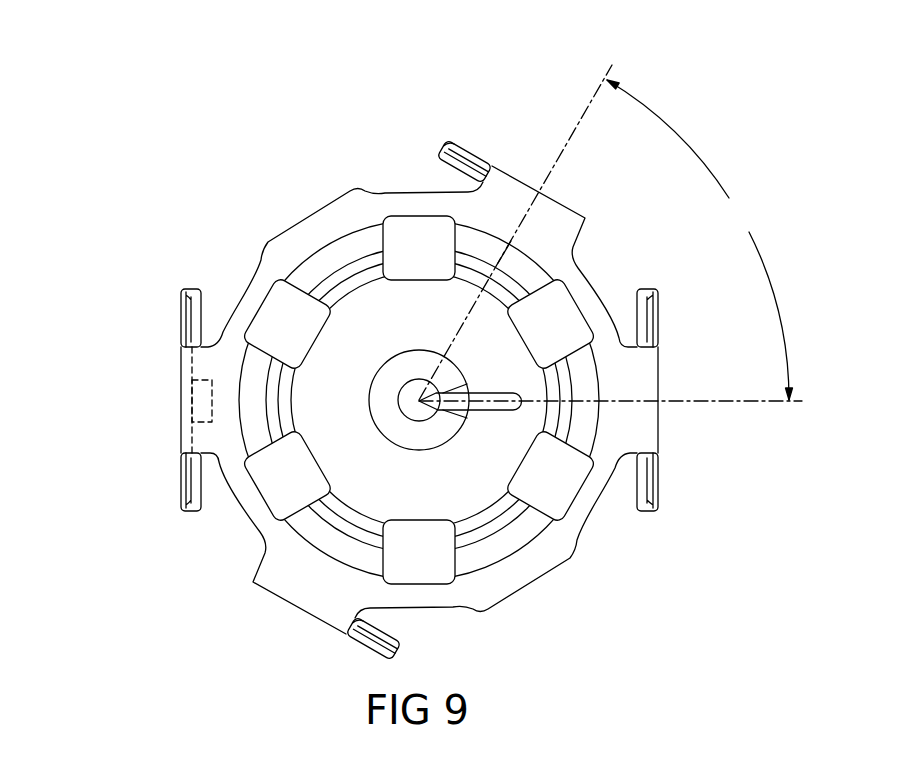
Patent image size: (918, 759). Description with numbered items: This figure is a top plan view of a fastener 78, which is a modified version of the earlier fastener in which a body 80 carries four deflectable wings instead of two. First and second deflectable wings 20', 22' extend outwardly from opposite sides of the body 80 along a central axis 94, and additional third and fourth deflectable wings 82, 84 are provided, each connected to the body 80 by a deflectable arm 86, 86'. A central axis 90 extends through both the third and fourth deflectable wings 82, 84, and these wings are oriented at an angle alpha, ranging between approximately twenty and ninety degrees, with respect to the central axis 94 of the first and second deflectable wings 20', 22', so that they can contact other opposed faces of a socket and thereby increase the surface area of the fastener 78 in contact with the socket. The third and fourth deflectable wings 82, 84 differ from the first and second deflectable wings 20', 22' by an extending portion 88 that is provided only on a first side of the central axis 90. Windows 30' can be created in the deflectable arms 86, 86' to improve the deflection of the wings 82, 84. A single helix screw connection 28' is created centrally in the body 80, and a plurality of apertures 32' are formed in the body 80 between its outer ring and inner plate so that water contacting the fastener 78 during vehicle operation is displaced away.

The fastener 78 is at (215, 187).
The body 80 is at (522, 578).
The third deflectable wing 82 is at (468, 162).
The fourth deflectable wing 84 is at (373, 643).
The deflectable arm 86 is at (587, 226).
The deflectable arm 86' is at (266, 589).
The extending portion 88 is at (445, 152).
The central axis 90 is at (565, 129).
The central axis 94 is at (728, 406).
The first deflectable wing 20' is at (686, 400).
The second deflectable wing 22' is at (155, 400).
The helix screw connection 28' is at (507, 348).
The window 30' is at (158, 402).
The apertures 32' is at (389, 400).